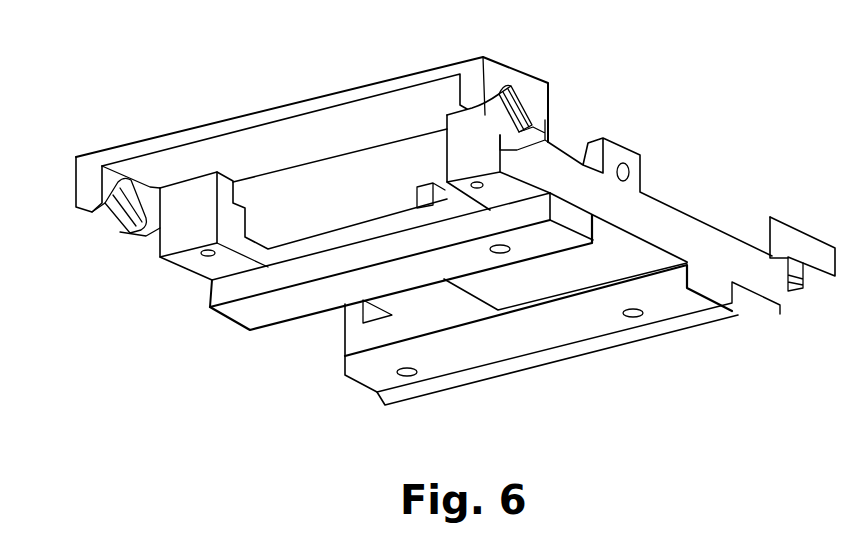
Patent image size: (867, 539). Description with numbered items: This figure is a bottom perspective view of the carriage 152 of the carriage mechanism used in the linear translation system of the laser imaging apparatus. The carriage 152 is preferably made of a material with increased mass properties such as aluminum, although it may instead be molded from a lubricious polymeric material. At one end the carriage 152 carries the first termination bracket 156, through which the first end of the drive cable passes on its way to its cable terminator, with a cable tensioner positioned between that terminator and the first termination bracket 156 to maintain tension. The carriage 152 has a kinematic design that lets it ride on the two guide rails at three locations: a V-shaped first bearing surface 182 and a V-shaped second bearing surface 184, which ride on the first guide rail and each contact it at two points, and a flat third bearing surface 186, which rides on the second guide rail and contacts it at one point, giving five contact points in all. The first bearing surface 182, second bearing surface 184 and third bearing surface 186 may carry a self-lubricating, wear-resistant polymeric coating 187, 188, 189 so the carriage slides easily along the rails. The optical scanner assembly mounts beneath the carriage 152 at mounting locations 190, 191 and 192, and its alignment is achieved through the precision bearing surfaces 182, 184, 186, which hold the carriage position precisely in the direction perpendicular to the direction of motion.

The carriage 152 is at (272, 86).
The first termination bracket 156 is at (640, 162).
The first bearing surface 182 is at (127, 233).
The second bearing surface 184 is at (520, 120).
The third bearing surface 186 is at (822, 280).
The self-lubricating, wear-resistant polymeric coating 187 is at (115, 213).
The self-lubricating, wear-resistant polymeric coating 188 is at (500, 108).
The self-lubricating, wear-resistant polymeric coating 189 is at (788, 292).
The mounting location 190 is at (410, 380).
The mounting location 191 is at (502, 258).
The mounting location 192 is at (635, 323).